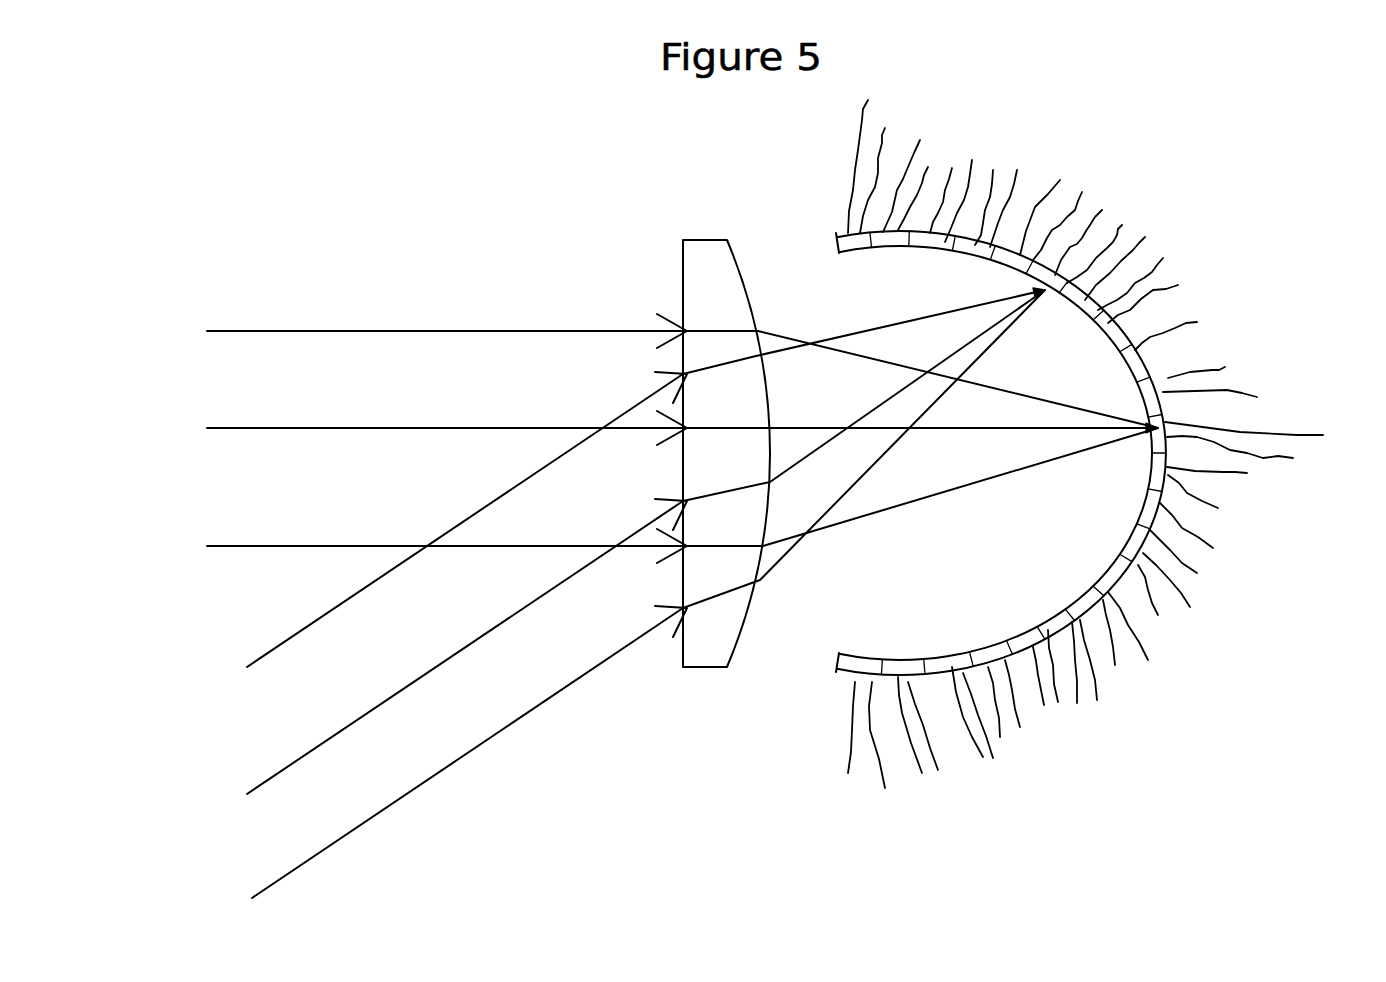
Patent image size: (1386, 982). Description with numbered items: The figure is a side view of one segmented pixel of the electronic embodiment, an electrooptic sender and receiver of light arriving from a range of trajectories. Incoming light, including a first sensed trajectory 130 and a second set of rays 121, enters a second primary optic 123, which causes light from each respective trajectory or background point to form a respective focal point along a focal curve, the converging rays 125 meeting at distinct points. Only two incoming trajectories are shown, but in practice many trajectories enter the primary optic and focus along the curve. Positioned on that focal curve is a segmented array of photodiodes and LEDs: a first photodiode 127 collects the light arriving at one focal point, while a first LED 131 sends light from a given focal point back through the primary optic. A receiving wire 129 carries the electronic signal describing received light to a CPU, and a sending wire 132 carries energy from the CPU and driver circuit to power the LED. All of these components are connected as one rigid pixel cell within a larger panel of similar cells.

The on-axis incident light rays 121 is at (437, 331).
The second primary optic 123 is at (703, 670).
The refracted light rays 125 is at (788, 337).
The first photodiode 127 is at (1030, 292).
The receiving wire 129 is at (1092, 226).
The first sensed trajectory 130 is at (540, 707).
The first LED 131 is at (1133, 440).
The sending wire 132 is at (1290, 433).